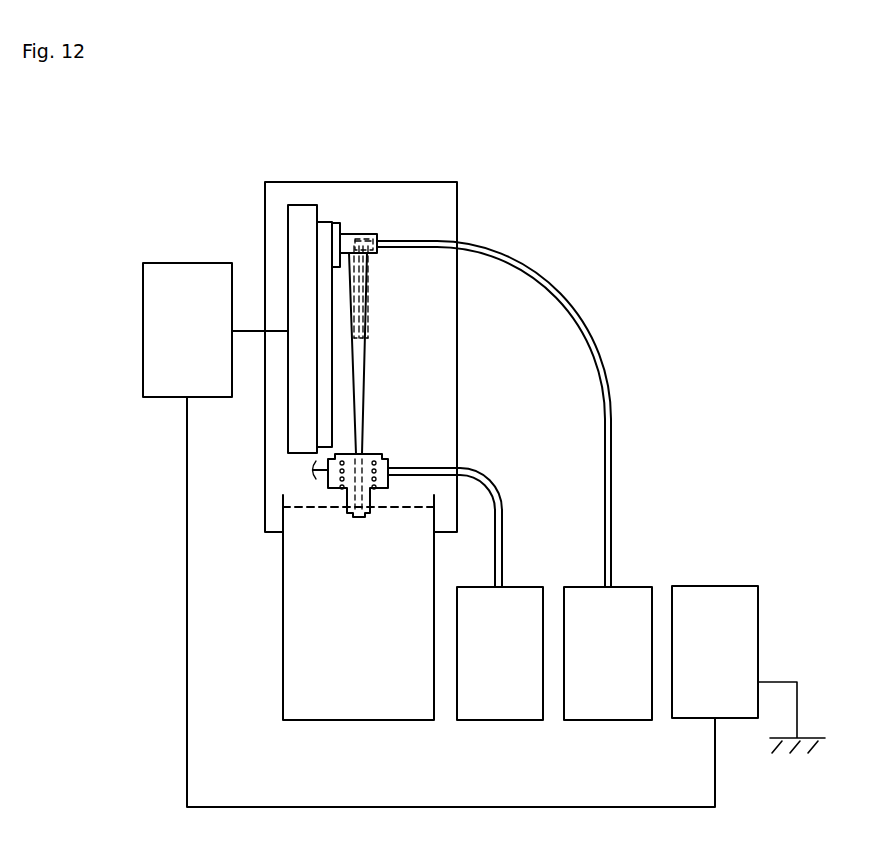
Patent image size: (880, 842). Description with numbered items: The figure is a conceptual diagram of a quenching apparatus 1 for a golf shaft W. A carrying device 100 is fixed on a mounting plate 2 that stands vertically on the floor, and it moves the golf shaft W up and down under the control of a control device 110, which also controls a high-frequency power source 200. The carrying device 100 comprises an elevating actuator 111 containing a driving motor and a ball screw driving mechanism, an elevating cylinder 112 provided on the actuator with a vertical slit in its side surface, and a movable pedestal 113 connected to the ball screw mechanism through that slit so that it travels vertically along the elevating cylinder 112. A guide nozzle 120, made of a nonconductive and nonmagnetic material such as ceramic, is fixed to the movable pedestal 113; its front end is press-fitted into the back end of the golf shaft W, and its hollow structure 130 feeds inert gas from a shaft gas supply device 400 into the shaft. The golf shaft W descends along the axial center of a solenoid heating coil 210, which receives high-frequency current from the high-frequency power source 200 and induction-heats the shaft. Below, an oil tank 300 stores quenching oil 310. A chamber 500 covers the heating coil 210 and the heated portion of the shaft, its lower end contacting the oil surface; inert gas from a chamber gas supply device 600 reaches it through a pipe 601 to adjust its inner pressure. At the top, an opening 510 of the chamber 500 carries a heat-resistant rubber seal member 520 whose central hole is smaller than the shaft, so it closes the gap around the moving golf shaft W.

The quenching apparatus 1 is at (655, 385).
The mounting plate 2 is at (432, 197).
The carrying device 100 is at (246, 204).
The control device 110 is at (160, 334).
The elevating actuator 111 is at (297, 213).
The elevating cylinder 112 is at (322, 230).
The movable pedestal 113 is at (336, 232).
The guide nozzle 120 is at (363, 312).
The hollow structure 130 is at (355, 278).
The golf shaft W is at (358, 355).
The heating coil 210 is at (388, 462).
The high-frequency power source 200 is at (735, 632).
The oil tank 300 is at (368, 722).
The quenching oil 310 is at (295, 639).
The shaft gas supply device 400 is at (610, 722).
The chamber 500 is at (388, 480).
The opening 510 is at (357, 456).
The seal member 520 is at (366, 454).
The chamber gas supply device 600 is at (507, 722).
The pipe 601 is at (503, 542).